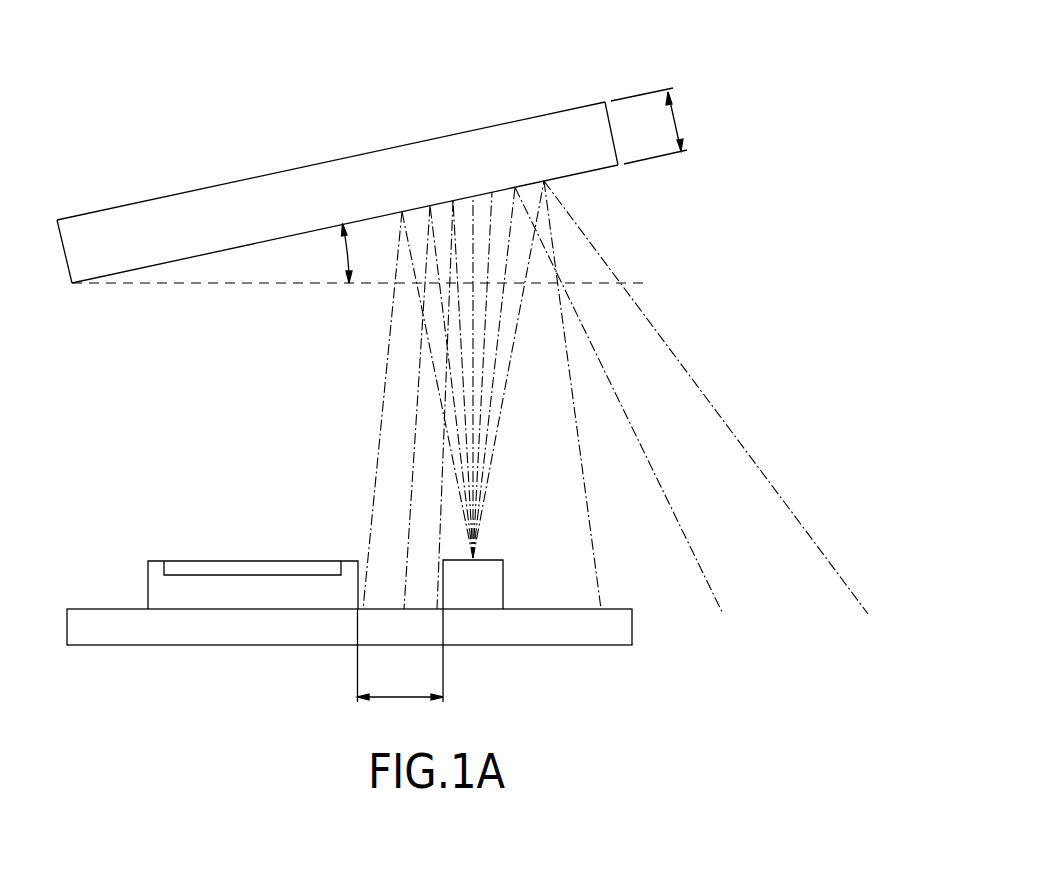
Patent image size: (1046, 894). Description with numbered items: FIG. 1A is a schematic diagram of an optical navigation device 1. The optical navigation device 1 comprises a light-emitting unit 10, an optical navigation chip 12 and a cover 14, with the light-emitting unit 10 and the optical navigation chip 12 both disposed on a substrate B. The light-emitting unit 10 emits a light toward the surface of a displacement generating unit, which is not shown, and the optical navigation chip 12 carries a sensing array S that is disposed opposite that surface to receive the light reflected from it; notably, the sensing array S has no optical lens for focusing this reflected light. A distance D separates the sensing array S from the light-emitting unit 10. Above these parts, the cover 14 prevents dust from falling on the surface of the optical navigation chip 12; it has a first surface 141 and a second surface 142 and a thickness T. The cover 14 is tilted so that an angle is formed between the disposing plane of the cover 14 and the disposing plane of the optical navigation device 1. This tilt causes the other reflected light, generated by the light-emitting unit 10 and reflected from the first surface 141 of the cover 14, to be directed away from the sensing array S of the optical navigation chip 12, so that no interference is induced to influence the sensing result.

The optical navigation device 1 is at (71, 33).
The light-emitting unit 10 is at (480, 598).
The optical navigation chip 12 is at (157, 588).
The cover 14 is at (280, 192).
The first surface 141 is at (578, 172).
The second surface 142 is at (562, 110).
The sensing array S is at (192, 567).
The substrate B is at (232, 630).
The distance D is at (401, 655).
The thickness T is at (649, 126).